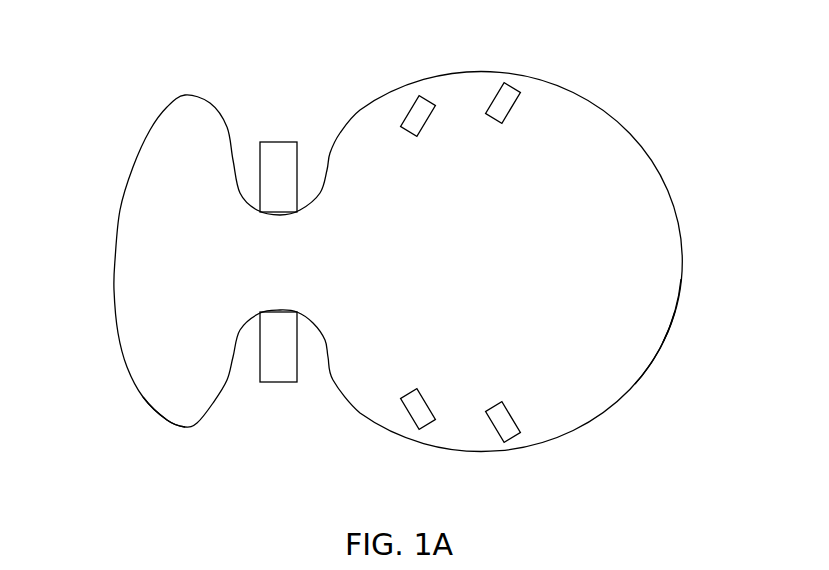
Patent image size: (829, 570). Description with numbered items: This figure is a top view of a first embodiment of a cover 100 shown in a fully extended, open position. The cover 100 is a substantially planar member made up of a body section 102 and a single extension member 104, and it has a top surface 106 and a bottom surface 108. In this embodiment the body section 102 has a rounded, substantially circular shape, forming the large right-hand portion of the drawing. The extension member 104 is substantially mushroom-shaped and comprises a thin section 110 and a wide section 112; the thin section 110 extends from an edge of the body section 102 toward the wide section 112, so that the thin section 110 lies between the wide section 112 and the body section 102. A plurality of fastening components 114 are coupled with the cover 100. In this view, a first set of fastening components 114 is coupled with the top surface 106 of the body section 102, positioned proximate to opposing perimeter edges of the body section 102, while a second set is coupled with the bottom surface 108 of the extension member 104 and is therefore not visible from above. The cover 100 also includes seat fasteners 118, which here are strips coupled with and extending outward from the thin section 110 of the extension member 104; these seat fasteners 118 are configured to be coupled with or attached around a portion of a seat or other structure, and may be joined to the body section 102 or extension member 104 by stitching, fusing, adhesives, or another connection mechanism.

The cover 100 is at (291, 71).
The body section 102 is at (480, 262).
The extension member 104 is at (187, 250).
The top surface 106 is at (610, 332).
The bottom surface 108 is at (690, 313).
The thin section 110 is at (275, 262).
The wide section 112 is at (172, 388).
The fastening components 114 is at (420, 100).
The seat fasteners 118 is at (272, 365).